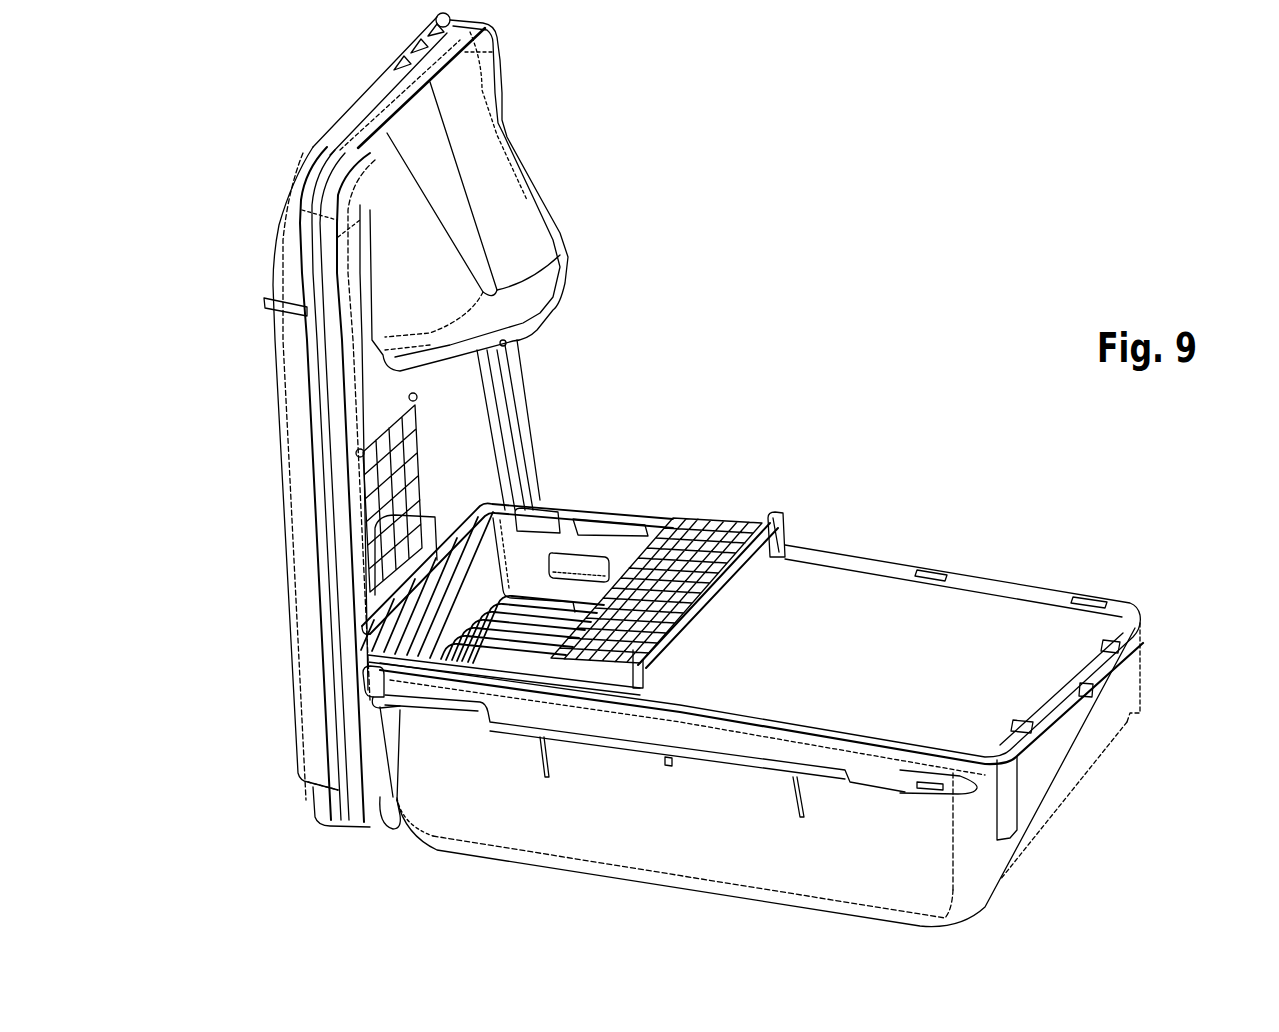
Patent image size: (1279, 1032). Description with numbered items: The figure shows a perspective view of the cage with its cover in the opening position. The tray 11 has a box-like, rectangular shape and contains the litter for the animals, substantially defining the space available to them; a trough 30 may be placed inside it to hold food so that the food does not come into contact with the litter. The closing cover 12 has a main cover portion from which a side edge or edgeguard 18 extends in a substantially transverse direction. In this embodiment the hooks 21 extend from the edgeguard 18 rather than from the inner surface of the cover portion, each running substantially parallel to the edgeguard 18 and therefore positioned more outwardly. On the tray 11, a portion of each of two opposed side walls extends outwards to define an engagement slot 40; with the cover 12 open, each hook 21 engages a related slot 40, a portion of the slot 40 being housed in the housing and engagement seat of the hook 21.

The tray 11 is at (1060, 830).
The closing cover 12 is at (277, 362).
The side edge or edgeguard 18 is at (323, 152).
The hook 21 is at (377, 683).
The trough 30 is at (717, 517).
The engagement slot 40 is at (383, 827).